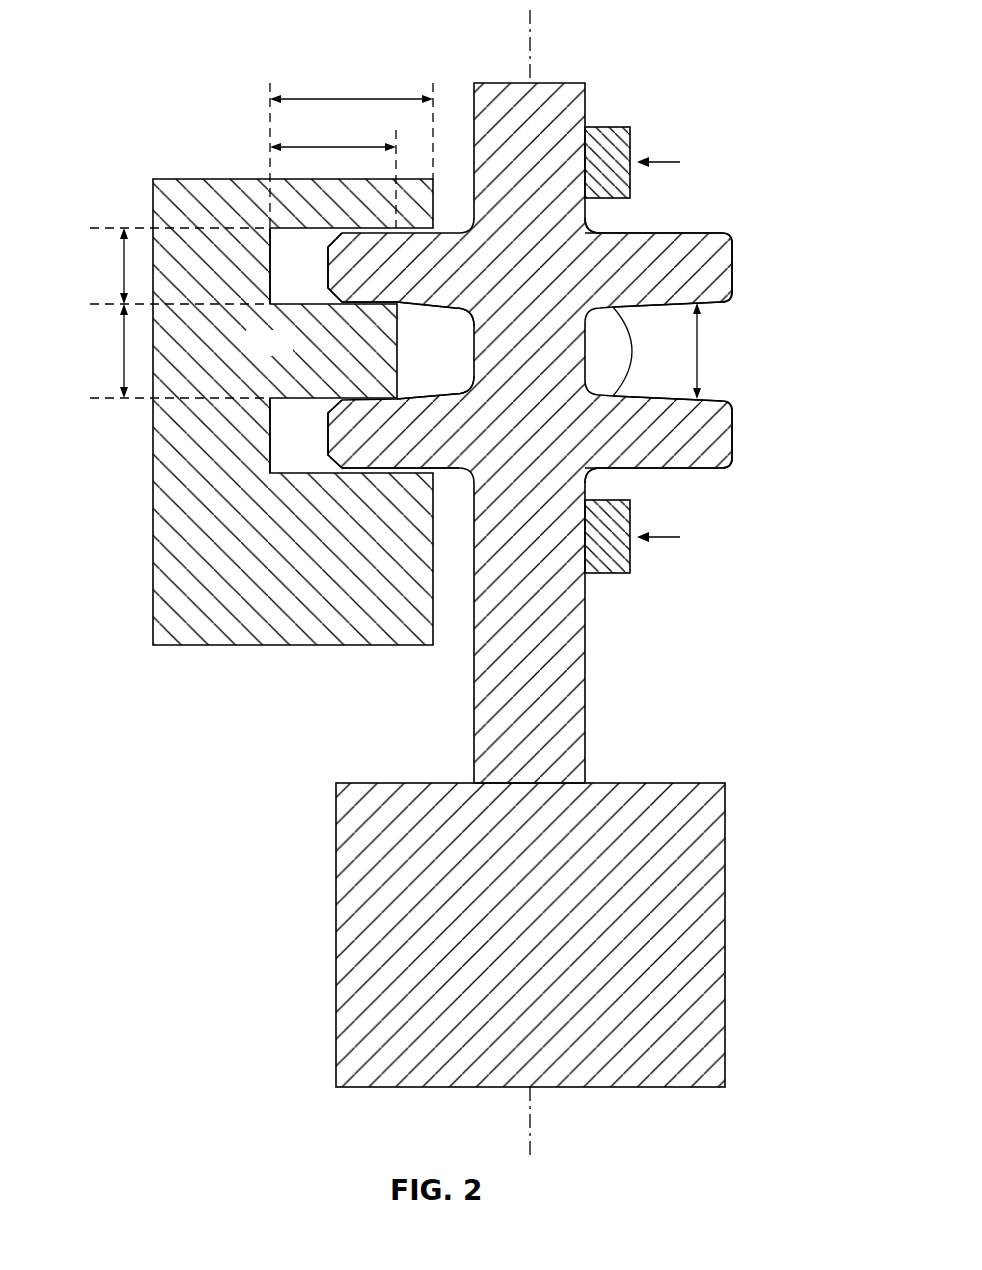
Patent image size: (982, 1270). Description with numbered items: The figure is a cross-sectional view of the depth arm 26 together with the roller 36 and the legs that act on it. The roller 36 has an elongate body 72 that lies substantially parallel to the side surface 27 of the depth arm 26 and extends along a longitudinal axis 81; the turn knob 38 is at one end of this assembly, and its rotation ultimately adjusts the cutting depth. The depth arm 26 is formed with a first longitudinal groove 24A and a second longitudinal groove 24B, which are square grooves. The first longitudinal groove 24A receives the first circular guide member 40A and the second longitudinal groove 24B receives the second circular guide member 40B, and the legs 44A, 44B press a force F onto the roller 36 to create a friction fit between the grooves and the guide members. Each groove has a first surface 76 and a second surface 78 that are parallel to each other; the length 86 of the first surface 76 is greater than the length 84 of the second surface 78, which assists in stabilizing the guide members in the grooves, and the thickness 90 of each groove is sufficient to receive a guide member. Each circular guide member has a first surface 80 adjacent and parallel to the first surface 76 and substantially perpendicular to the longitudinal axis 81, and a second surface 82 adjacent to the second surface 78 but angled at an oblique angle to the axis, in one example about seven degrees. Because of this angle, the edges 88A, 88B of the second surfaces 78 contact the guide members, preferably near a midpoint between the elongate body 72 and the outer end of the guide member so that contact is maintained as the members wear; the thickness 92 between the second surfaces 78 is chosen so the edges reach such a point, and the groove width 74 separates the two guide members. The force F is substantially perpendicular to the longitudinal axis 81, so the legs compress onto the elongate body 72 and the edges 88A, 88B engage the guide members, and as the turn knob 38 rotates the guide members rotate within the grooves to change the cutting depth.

The longitudinal axis 81 is at (545, 55).
The depth arm 26 is at (190, 641).
The side surface 27 is at (432, 628).
The elongate body 72 is at (585, 708).
The turn knob 38 is at (725, 830).
The roller 36 is at (742, 878).
The first circular guide member 44A is at (607, 127).
The second circular guide member 44B is at (607, 573).
The force F is at (670, 349).
The first circular guide member 40A is at (722, 262).
The second circular guide member 40B is at (722, 425).
The first surface 80 is at (650, 233).
The second surface 82 is at (633, 351).
The groove width 74 is at (700, 352).
The second surface 78 is at (307, 300).
The first surface 76 is at (290, 231).
The edge 88A is at (405, 303).
The edge 88B is at (405, 398).
The first longitudinal groove 24A is at (287, 288).
The second longitudinal groove 24B is at (288, 446).
The length 86 is at (350, 99).
The length 84 is at (330, 147).
The thickness 90 is at (124, 266).
The thickness 92 is at (124, 351).